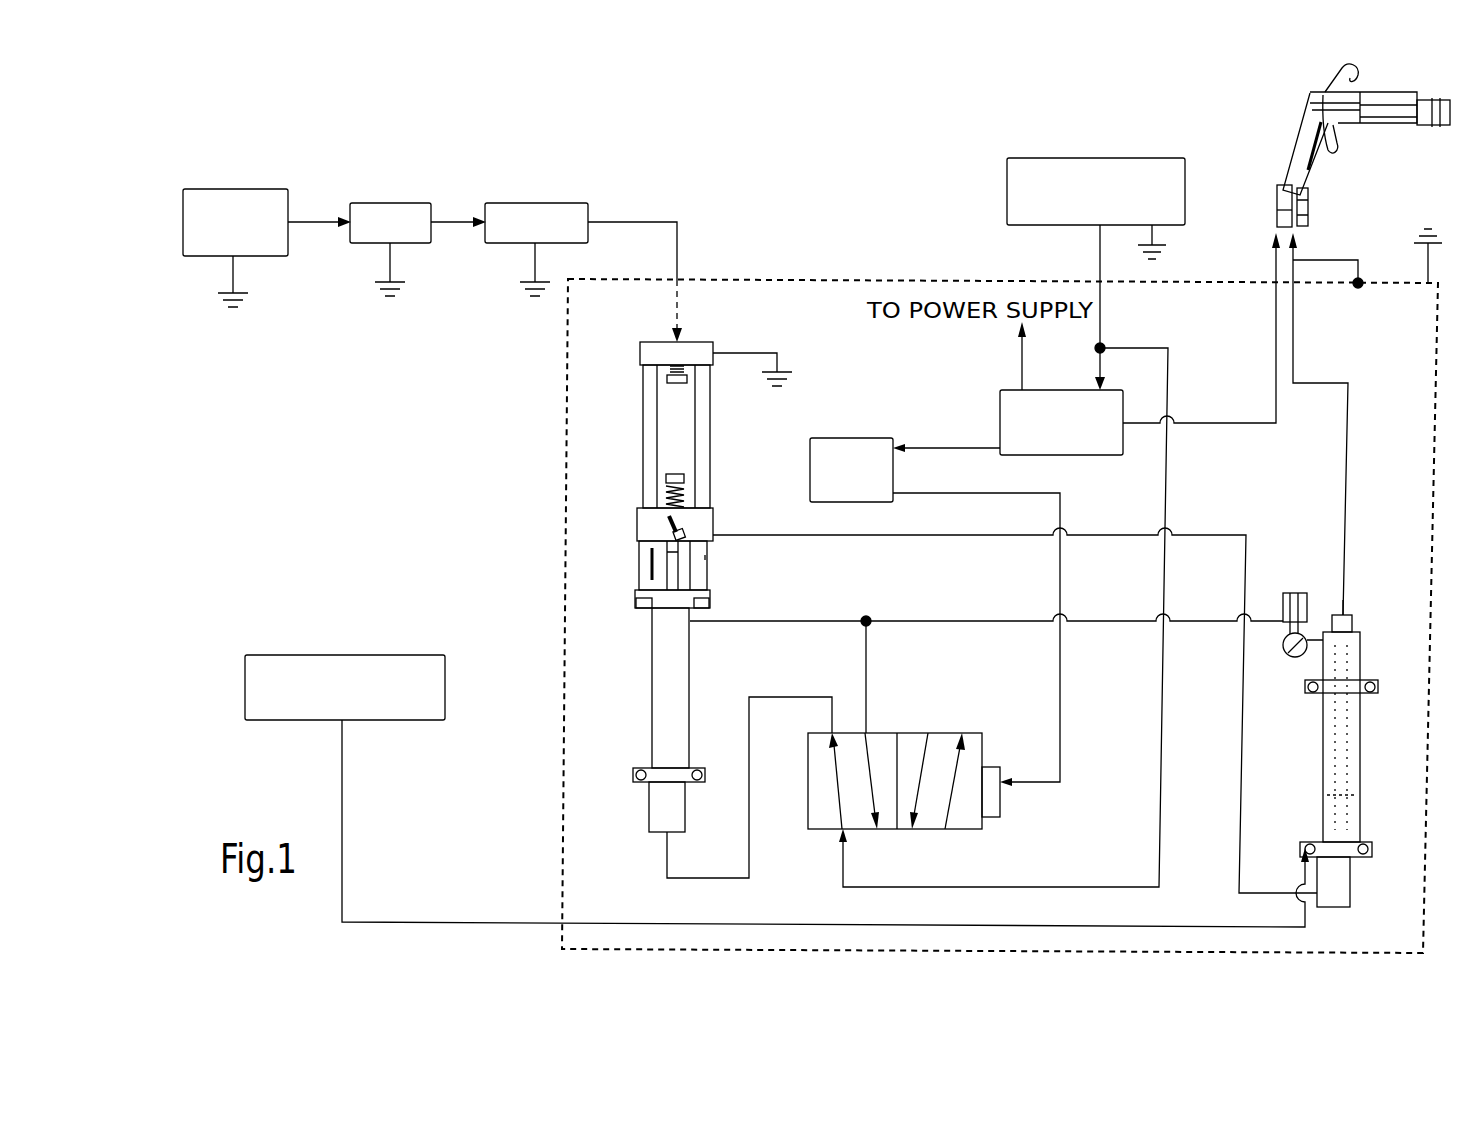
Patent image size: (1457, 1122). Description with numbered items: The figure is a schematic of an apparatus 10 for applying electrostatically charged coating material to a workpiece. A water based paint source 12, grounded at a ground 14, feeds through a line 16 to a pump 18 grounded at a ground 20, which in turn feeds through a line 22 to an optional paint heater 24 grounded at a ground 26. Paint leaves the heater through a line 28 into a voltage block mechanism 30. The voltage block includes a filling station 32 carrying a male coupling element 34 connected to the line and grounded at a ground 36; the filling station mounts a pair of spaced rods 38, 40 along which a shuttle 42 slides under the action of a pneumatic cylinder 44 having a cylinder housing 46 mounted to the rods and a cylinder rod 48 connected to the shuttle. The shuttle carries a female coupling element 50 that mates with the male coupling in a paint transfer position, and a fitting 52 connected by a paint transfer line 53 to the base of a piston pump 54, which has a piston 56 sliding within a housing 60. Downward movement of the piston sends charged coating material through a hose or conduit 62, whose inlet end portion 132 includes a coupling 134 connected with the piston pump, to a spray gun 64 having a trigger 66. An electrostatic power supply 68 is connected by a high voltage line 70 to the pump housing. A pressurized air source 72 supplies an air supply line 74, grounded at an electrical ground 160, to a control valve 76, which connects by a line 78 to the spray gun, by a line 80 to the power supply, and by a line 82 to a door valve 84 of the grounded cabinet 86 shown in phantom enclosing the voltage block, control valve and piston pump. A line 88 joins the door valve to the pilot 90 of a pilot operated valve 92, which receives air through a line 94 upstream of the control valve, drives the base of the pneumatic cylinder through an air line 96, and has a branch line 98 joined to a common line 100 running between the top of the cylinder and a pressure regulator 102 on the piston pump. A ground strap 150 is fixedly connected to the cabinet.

The apparatus 10 is at (462, 485).
The paint source 12 is at (218, 189).
The ground 14 is at (225, 291).
The line 16 is at (310, 220).
The pump 18 is at (388, 203).
The ground 20 is at (385, 281).
The line 22 is at (447, 220).
The paint heater 24 is at (535, 203).
The ground 26 is at (530, 281).
The line 28 is at (685, 265).
The voltage block mechanism 30 is at (653, 566).
The filling station 32 is at (713, 342).
The male coupling element 34 is at (667, 380).
The ground 36 is at (790, 366).
The rod 38 is at (641, 420).
The rod 40 is at (712, 400).
The shuttle 42 is at (625, 525).
The pneumatic cylinder 44 is at (632, 653).
The cylinder housing 46 is at (690, 700).
The cylinder rod 48 is at (680, 568).
The female coupling element 50 is at (684, 478).
The fitting 52 is at (683, 523).
The paint transfer line 53 is at (807, 537).
The piston pump 54 is at (1337, 740).
The piston 56 is at (1323, 760).
The housing 60 is at (1352, 825).
The hose or conduit 62 is at (1347, 383).
The spray gun 64 is at (1342, 145).
The trigger 66 is at (1340, 140).
The electrostatic power supply 68 is at (445, 700).
The high voltage line 70 is at (440, 922).
The pressurized air source 72 is at (1007, 205).
The air supply line 74 is at (1098, 265).
The control valve 76 is at (975, 380).
The line 78 is at (1200, 423).
The line 80 is at (1021, 370).
The line 82 is at (985, 447).
The door valve 84 is at (830, 438).
The cabinet 86 is at (997, 329).
The line 88 is at (1060, 720).
The pilot 90 is at (990, 767).
The pilot operated valve 92 is at (912, 750).
The line 94 is at (1166, 465).
The air line 96 is at (712, 878).
The branch line 98 is at (866, 700).
The common line 100 is at (990, 620).
The pressure regulator 102 is at (1295, 593).
The inlet end portion 132 is at (1344, 575).
The coupling 134 is at (1352, 620).
The ground strap 150 is at (1335, 260).
The electrical ground 160 is at (1160, 262).